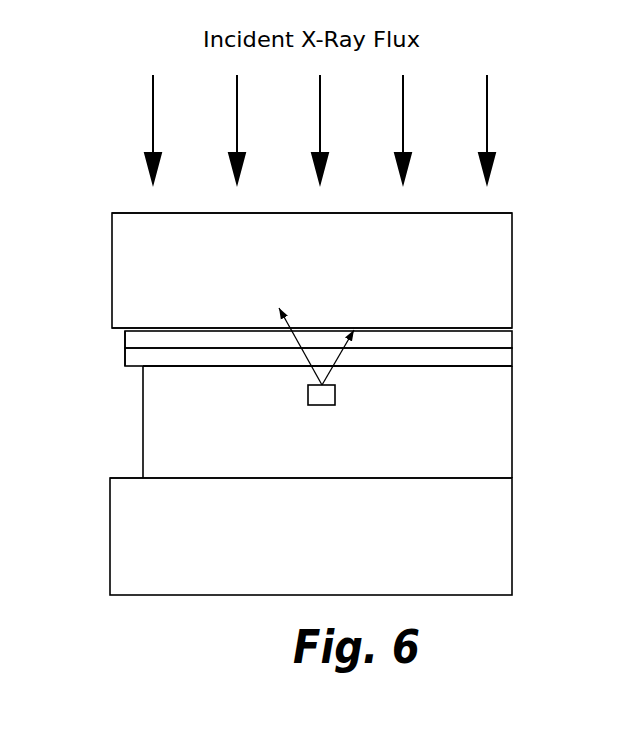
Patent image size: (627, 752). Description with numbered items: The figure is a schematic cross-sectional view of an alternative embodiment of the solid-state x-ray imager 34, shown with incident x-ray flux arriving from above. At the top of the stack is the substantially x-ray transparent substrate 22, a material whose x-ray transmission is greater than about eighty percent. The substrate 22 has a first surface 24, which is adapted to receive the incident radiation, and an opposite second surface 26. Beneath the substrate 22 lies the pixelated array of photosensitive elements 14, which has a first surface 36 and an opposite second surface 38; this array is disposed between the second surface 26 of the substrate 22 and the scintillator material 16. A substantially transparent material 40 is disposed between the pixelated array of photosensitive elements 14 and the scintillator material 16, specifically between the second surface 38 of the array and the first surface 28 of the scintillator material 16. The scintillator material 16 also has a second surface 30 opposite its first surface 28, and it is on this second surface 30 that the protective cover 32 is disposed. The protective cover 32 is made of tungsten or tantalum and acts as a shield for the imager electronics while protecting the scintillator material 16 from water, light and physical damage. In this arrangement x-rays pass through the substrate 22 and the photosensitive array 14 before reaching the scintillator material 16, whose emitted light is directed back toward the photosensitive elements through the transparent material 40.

The x-ray imager 34 is at (74, 165).
The substantially x-ray transparent substrate 22 is at (517, 254).
The first surface 24 is at (105, 212).
The second surface 26 is at (105, 331).
The first surface 36 is at (517, 331).
The second surface 38 is at (517, 350).
The pixelated array of photosensitive elements 14 is at (123, 338).
The substantially transparent material 40 is at (125, 368).
The first surface 28 is at (141, 368).
The scintillator material 16 is at (517, 422).
The second surface 30 is at (517, 478).
The protective cover 32 is at (517, 573).